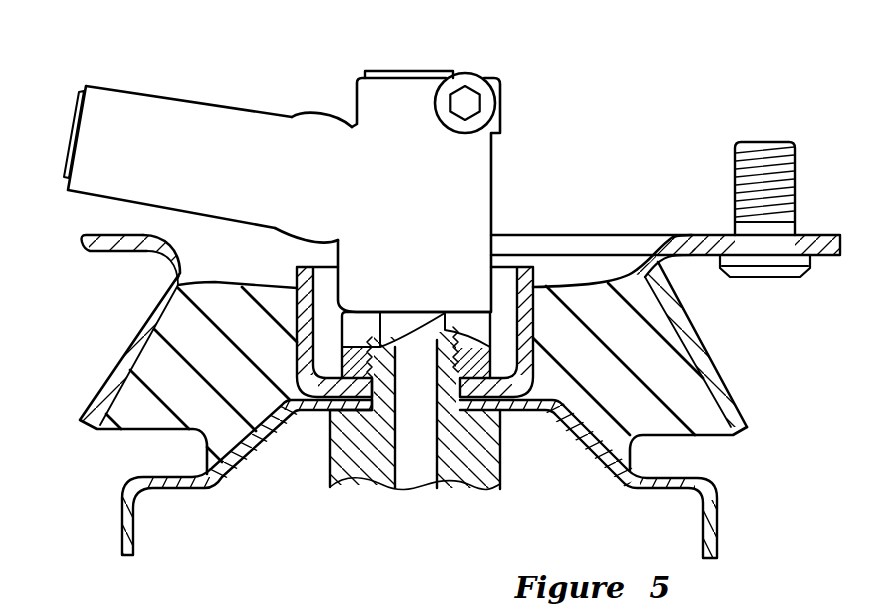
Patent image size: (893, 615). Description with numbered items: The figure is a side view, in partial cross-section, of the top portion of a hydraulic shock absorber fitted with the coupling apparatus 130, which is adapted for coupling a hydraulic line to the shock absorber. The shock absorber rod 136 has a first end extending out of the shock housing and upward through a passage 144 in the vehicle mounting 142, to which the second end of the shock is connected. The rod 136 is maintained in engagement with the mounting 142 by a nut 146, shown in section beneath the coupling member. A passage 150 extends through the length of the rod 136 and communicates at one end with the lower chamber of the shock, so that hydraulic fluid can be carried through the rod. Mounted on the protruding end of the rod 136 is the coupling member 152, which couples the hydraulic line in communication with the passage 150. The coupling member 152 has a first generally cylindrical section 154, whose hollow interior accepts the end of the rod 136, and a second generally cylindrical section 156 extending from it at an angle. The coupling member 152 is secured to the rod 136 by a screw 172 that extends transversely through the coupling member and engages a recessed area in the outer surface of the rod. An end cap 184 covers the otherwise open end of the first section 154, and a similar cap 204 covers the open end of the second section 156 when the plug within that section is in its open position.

The coupling apparatus 130 is at (430, 194).
The rod 136 is at (497, 450).
The vehicle mounting 142 is at (700, 349).
The passage 144 is at (383, 405).
The nut 146 is at (478, 322).
The passage 150 is at (410, 468).
The coupling member 152 is at (476, 162).
The first generally cylindrical section 154 is at (493, 198).
The second generally cylindrical section 156 is at (242, 128).
The screw 172 is at (468, 105).
The end cap 184 is at (413, 70).
The cap 204 is at (70, 137).